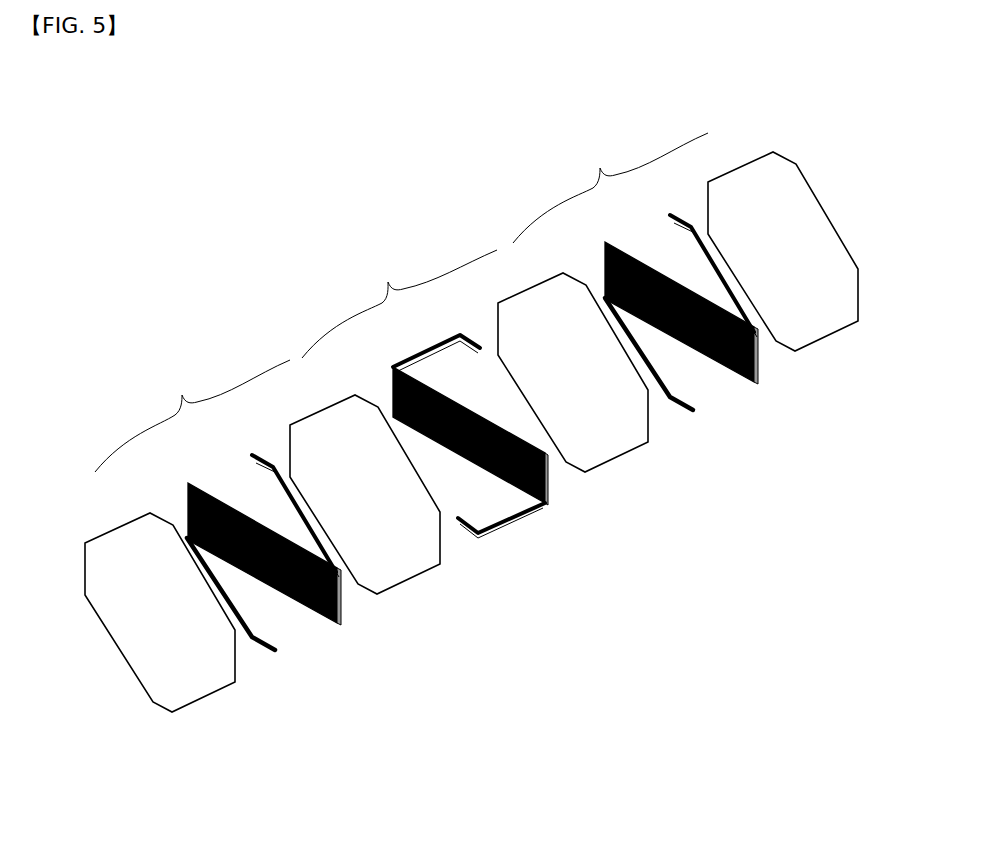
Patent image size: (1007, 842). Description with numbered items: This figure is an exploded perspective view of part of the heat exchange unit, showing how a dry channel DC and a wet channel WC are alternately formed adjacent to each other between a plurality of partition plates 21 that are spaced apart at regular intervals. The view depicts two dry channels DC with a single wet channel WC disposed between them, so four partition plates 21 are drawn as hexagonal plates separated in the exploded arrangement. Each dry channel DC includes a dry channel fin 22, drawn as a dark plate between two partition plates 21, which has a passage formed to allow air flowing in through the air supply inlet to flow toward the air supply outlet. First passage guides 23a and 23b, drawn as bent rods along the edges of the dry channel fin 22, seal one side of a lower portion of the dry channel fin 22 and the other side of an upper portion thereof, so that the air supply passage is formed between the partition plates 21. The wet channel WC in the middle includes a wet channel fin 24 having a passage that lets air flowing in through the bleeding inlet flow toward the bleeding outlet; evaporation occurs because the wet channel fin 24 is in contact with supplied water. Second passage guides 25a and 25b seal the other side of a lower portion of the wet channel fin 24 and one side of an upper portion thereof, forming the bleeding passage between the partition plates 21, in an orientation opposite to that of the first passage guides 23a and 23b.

The partition plate 21 is at (207, 685).
The dry channel fin 22 is at (307, 612).
The first passage guide 23a is at (268, 655).
The first passage guide 23b is at (263, 452).
The wet channel fin 24 is at (498, 485).
The second passage guide 25a is at (520, 517).
The second passage guide 25b is at (427, 348).
The dry channel DC is at (401, 302).
The wet channel WC is at (399, 304).